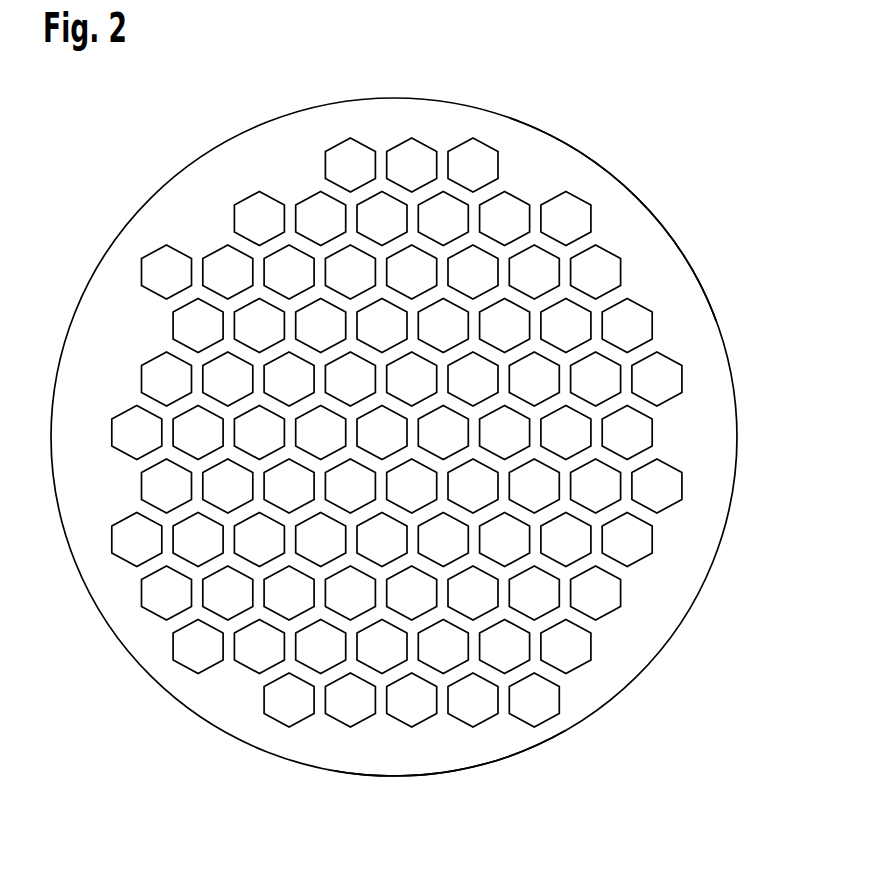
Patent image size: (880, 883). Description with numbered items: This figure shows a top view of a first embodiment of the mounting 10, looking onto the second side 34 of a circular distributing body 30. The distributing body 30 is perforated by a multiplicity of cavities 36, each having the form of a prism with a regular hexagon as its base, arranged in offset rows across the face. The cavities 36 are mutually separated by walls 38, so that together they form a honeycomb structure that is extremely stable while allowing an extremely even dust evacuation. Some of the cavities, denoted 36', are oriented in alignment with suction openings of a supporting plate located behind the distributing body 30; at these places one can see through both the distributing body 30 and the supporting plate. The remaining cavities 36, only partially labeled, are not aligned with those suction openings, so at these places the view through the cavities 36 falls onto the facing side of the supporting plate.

The mounting 10 is at (522, 804).
The distributing body 30 is at (673, 602).
The second side 34 is at (663, 250).
The cavities 36 is at (443, 432).
The cavities oriented in alignment with suction openings 36' is at (366, 432).
The walls 38 is at (487, 247).